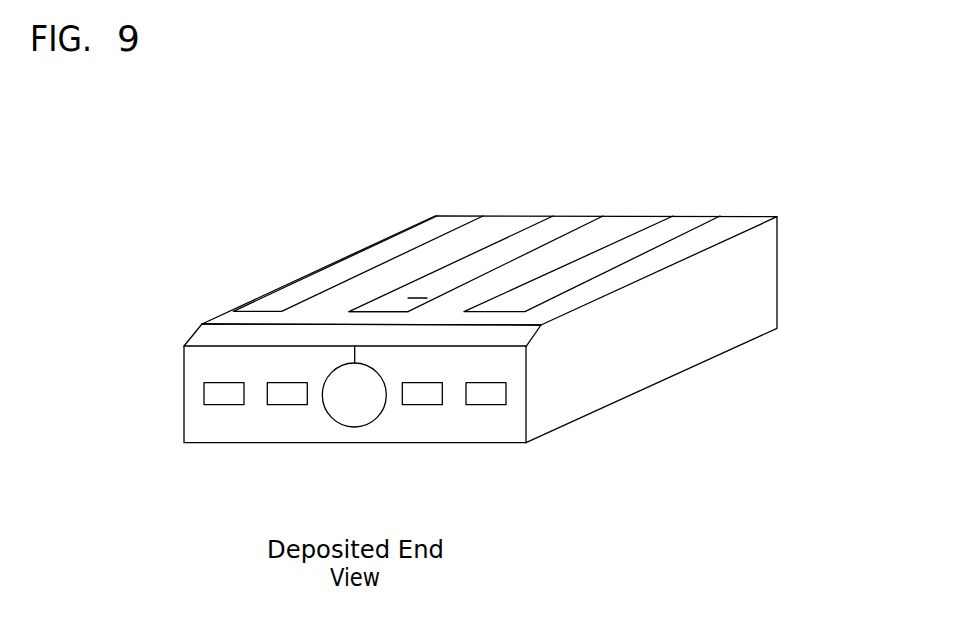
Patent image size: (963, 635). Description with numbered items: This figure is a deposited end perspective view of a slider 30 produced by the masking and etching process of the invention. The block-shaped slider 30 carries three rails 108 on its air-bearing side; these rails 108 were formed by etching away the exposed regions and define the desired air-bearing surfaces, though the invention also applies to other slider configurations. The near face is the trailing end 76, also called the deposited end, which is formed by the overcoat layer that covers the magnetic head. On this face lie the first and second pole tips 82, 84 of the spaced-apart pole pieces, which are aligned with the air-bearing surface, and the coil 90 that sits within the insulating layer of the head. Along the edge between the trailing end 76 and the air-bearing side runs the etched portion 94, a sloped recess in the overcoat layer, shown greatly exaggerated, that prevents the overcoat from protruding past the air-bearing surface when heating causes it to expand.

The slider 30 is at (797, 375).
The trailing end 76 is at (500, 430).
The first pole tip 82 is at (410, 298).
The second pole tip 84 is at (393, 306).
The coil 90 is at (367, 425).
The etched portion 94 is at (441, 343).
The rails 108 is at (382, 255).